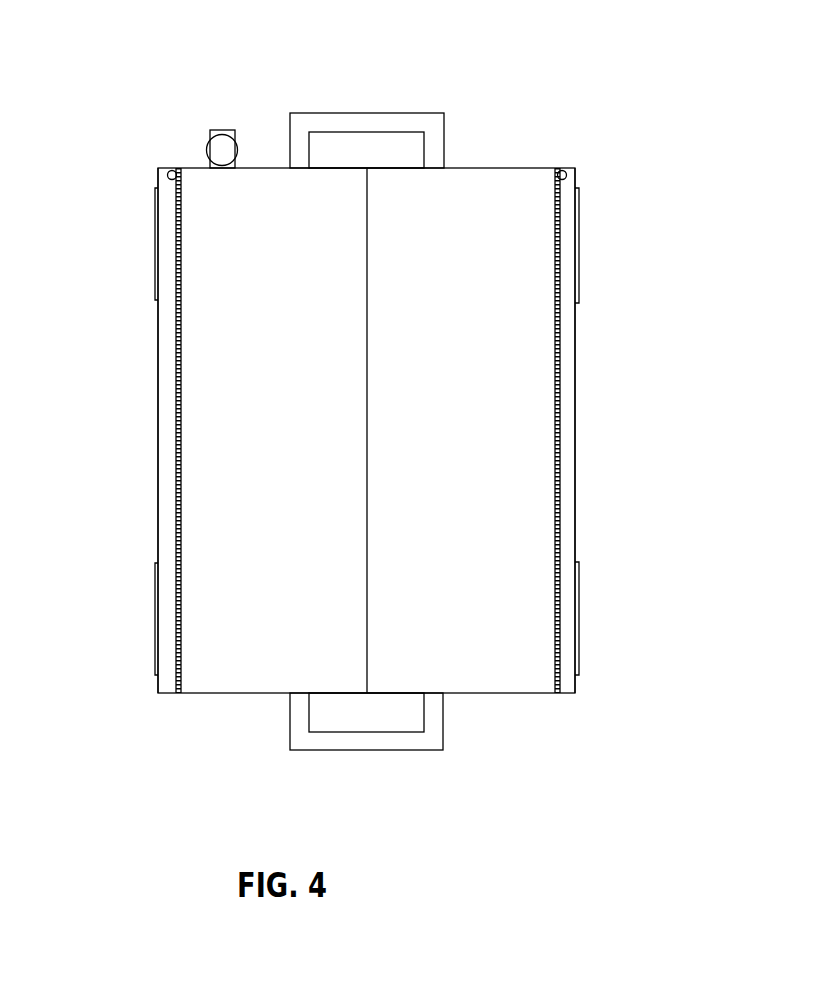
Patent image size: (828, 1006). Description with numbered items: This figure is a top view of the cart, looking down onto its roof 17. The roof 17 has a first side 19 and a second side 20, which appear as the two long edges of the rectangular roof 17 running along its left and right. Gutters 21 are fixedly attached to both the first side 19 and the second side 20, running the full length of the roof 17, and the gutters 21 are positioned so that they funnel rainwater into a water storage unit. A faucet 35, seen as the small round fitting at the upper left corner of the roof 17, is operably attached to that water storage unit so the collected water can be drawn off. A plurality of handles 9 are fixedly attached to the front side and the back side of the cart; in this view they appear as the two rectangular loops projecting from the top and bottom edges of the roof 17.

The handles 9 is at (345, 113).
The roof 17 is at (490, 169).
The first side 19 is at (558, 512).
The second side 20 is at (178, 492).
The gutters 21 is at (154, 382).
The faucet 35 is at (219, 132).